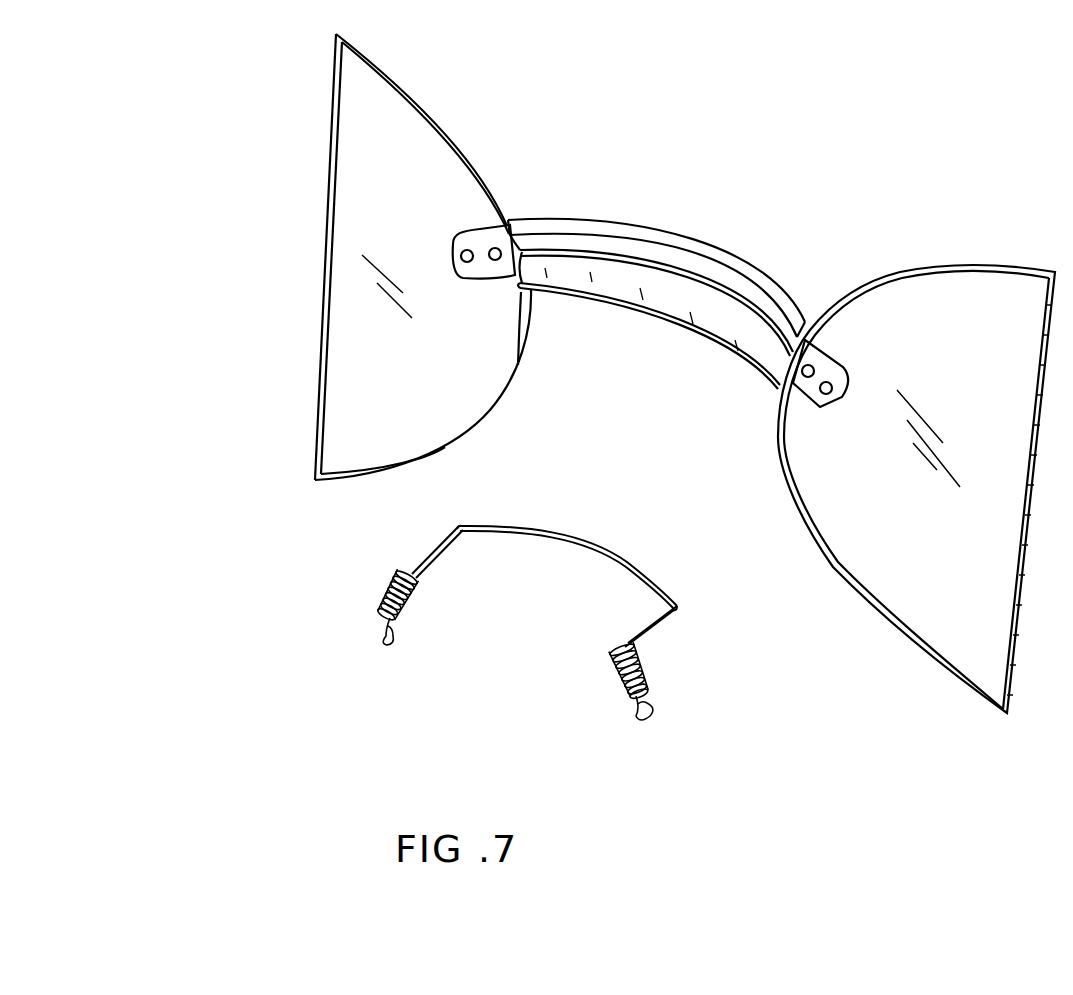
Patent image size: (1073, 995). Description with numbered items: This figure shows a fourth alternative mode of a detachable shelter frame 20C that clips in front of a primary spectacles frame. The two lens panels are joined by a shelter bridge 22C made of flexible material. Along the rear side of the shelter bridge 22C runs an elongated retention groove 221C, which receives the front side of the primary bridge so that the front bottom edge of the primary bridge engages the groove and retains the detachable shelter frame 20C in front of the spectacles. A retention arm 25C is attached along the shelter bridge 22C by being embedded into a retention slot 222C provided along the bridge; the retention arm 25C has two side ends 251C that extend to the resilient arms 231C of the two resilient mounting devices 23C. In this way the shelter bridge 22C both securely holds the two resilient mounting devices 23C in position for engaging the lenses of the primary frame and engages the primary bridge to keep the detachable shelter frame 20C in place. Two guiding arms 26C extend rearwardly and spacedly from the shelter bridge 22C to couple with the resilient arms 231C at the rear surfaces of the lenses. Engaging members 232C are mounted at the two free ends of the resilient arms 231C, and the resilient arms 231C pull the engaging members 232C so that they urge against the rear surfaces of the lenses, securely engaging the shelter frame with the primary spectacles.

The detachable shelter frame 20C is at (878, 249).
The shelter bridge 22C is at (620, 232).
The elongated retention groove 221C is at (668, 294).
The retention slot 222C is at (729, 308).
The retention arm 25C is at (572, 534).
The side end 251C is at (459, 521).
The guiding arm 26C is at (448, 557).
The resilient mounting device 23C is at (735, 614).
The resilient arm 231C is at (375, 597).
The engaging member 232C is at (393, 642).